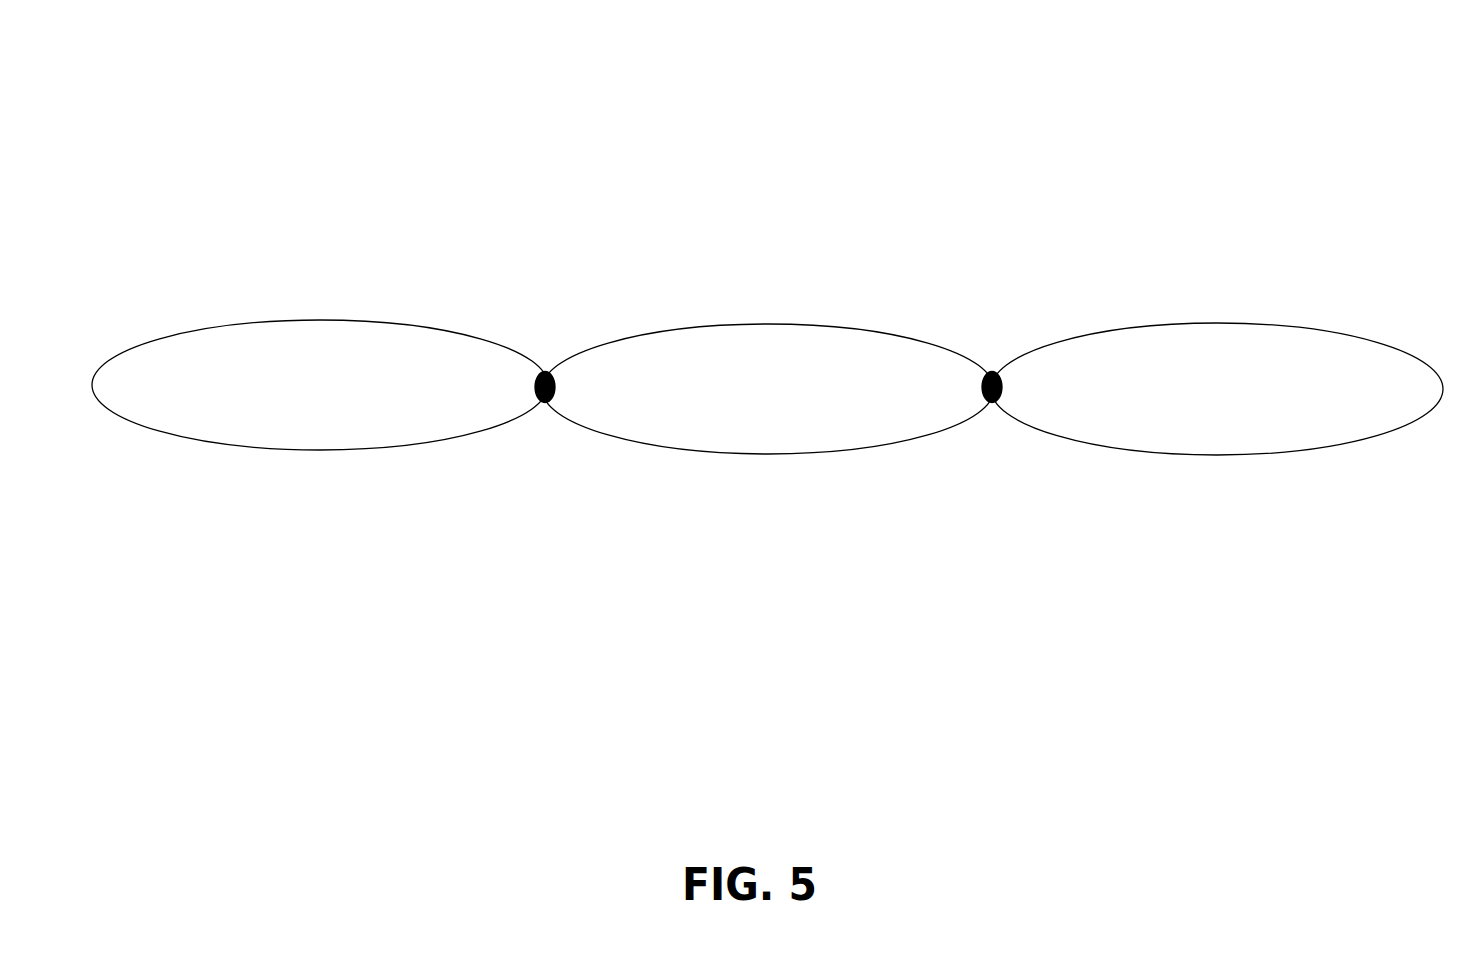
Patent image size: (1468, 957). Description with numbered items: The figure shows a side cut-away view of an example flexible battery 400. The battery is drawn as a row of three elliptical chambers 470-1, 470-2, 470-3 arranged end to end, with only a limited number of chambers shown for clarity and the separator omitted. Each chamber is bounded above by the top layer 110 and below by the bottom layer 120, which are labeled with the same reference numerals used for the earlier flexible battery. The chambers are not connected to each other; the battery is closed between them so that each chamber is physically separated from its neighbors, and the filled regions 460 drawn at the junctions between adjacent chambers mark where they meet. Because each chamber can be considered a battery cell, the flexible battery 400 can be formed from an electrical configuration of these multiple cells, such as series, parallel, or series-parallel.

The flexible battery 400 is at (280, 72).
The chamber 470-1 is at (343, 396).
The chamber 470-2 is at (812, 402).
The chamber 470-3 is at (1243, 398).
The interconnect joints 460 is at (990, 383).
The top layer 110 is at (307, 322).
The bottom layer 120 is at (345, 452).